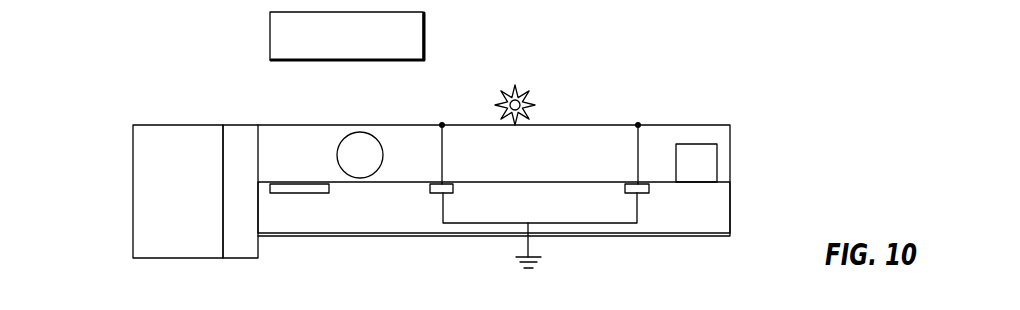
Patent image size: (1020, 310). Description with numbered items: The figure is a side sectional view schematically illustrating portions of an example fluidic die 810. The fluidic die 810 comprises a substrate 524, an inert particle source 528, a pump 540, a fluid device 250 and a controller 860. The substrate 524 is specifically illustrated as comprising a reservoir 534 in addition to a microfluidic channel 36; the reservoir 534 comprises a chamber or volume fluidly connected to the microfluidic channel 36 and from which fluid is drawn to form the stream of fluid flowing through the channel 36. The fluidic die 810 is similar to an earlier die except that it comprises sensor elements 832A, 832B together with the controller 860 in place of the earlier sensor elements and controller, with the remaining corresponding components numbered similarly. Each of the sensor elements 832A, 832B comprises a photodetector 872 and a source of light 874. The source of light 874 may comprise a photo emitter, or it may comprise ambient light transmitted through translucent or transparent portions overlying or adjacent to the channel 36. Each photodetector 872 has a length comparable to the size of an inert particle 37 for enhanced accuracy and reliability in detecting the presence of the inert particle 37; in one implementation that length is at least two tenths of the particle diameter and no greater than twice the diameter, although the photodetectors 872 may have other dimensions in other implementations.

The fluidic die 810 is at (58, 134).
The inert particle source 528 is at (133, 197).
The reservoir 534 is at (243, 125).
The controller 860 is at (270, 43).
The pump 540 is at (292, 184).
The inert particle 37 is at (350, 134).
The sensor element 832A is at (434, 184).
The sensor element 832B is at (641, 183).
The photodetector 872 is at (455, 182).
The source of light 874 is at (533, 102).
The microfluidic channel 36 is at (603, 137).
The fluid device 250 is at (719, 163).
The substrate 524 is at (725, 213).